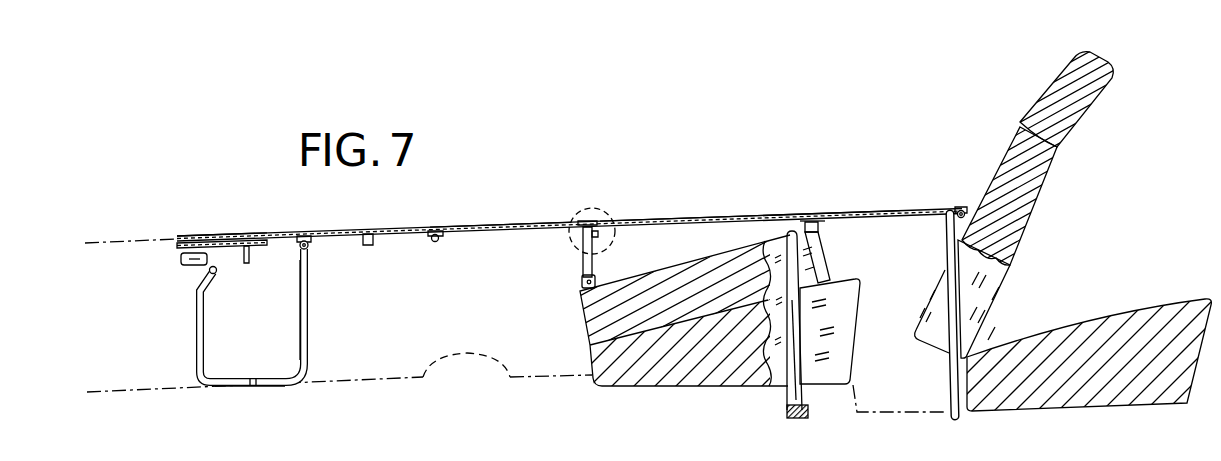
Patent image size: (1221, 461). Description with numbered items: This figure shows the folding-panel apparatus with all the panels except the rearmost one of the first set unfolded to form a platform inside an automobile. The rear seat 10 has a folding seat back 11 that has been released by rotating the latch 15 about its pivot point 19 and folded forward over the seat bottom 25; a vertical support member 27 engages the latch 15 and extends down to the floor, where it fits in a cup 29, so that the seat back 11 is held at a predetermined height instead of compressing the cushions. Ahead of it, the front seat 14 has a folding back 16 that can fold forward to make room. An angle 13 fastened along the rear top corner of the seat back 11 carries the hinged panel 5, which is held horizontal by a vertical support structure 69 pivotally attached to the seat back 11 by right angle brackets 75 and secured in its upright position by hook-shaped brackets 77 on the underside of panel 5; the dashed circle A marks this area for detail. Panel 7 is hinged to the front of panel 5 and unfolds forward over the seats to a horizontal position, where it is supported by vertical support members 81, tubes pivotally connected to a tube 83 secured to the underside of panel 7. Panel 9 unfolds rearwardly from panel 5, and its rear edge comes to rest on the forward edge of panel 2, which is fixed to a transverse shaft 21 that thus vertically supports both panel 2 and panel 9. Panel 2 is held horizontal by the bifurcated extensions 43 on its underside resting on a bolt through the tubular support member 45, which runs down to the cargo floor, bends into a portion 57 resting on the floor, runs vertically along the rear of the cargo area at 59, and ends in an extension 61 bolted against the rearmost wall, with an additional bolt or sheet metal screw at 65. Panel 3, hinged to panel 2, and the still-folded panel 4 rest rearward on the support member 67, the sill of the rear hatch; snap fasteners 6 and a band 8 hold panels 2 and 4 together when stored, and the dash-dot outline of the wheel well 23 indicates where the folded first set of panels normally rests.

The panel 2 is at (343, 232).
The panel 3 is at (232, 235).
The panel 4 is at (133, 240).
The panel 5 is at (705, 215).
The snap fasteners 6 is at (368, 245).
The panel 7 is at (833, 214).
The band 8 is at (247, 264).
The panel 9 is at (490, 221).
The rear seat 10 is at (680, 388).
The folding seat back 11 is at (595, 312).
The angle 13 is at (818, 228).
The front seat 14 is at (1118, 327).
The latch 15 is at (787, 226).
The folding back 16 is at (1080, 115).
The pivot point 19 is at (818, 243).
The tube or shaft 21 is at (437, 242).
The wheel well 23 is at (430, 367).
The seat bottom 25 is at (843, 325).
The vertical support member 27 is at (802, 392).
The cup 29 is at (800, 419).
The bifurcated extensions 43 is at (307, 250).
The tubular support member 45 is at (308, 332).
The portion 57 is at (238, 386).
The vertical section 59 is at (197, 331).
The extension 61 is at (212, 277).
The bolt or sheet metal screw 65 is at (256, 386).
The support member 67 is at (185, 263).
The vertical support structure 69 is at (583, 265).
The right angle brackets 75 is at (582, 283).
The hook-shaped brackets 77 is at (600, 228).
The vertical support members 81 is at (942, 210).
The tube 83 is at (959, 208).
The detail area A is at (590, 208).